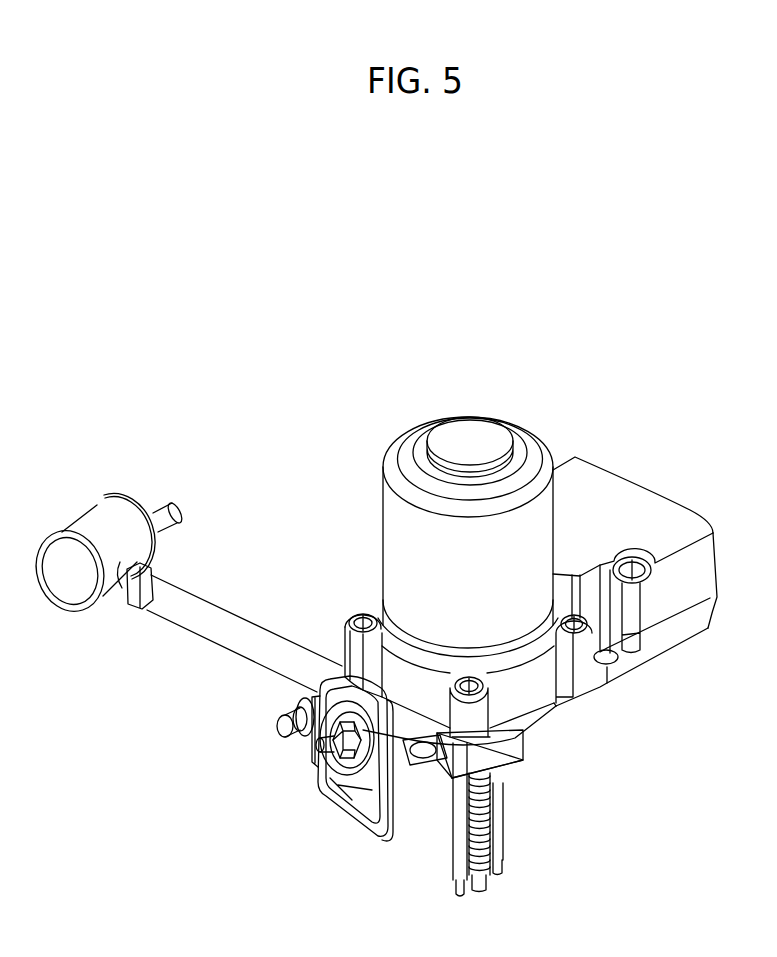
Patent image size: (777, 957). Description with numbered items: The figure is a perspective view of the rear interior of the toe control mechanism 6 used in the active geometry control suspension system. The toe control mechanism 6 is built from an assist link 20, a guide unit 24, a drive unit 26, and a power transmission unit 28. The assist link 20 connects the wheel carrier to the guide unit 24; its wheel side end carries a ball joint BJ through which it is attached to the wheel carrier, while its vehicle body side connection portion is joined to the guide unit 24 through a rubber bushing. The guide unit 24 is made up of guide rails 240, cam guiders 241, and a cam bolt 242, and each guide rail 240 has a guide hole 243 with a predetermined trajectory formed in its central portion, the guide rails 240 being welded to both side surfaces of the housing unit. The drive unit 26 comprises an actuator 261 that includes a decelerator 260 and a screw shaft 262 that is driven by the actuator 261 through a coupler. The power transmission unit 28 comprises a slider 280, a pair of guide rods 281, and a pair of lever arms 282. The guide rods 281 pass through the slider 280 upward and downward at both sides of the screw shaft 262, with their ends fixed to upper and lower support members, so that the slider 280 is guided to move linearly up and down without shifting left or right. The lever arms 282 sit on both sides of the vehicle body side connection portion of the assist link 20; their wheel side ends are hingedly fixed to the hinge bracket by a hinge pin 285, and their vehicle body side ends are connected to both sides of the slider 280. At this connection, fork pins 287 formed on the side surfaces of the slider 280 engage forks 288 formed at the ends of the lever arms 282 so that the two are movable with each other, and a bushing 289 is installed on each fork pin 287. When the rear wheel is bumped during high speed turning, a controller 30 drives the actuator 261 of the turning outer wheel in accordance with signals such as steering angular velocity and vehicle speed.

The toe control mechanism 6 is at (205, 450).
The controller 30 is at (657, 512).
The drive unit 26 is at (352, 531).
The actuator 261 is at (383, 500).
The slider 280 is at (508, 736).
The decelerator 260 is at (580, 665).
The ball joint BJ is at (70, 572).
The assist link 20 is at (202, 620).
The guide unit 24 is at (355, 852).
The cam guider 241 is at (370, 795).
The guide rail 240 is at (320, 790).
The guide hole 243 is at (345, 795).
The cam bolt 242 is at (320, 749).
The hinge pin 285 is at (283, 727).
The lever arm 282 is at (302, 695).
The power transmission unit 28 is at (433, 806).
The fork pin 287 is at (417, 767).
The fork 288 is at (440, 770).
The bushing 289 is at (457, 789).
The screw shaft 262 is at (490, 814).
The guide rod 281 is at (460, 852).